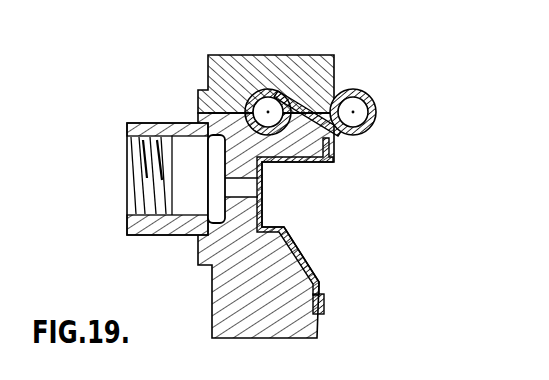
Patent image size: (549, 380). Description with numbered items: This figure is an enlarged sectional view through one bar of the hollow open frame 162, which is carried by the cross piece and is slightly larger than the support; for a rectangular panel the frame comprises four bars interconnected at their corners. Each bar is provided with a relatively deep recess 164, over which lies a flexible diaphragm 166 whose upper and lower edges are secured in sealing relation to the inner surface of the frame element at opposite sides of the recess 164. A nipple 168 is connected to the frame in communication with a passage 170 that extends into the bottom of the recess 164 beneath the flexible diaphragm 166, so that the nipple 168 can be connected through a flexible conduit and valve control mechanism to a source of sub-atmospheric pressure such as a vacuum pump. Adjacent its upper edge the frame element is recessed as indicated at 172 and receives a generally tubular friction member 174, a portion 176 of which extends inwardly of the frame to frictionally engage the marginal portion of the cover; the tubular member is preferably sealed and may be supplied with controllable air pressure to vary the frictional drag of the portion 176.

The hollow open frame 162 is at (306, 320).
The recess 164 is at (302, 266).
The flexible diaphragm 166 is at (313, 166).
The nipple 168 is at (173, 228).
The passage 170 is at (263, 204).
The recess 172 is at (276, 91).
The tubular friction member 174 is at (337, 91).
The portion of tubular friction member 176 is at (377, 112).